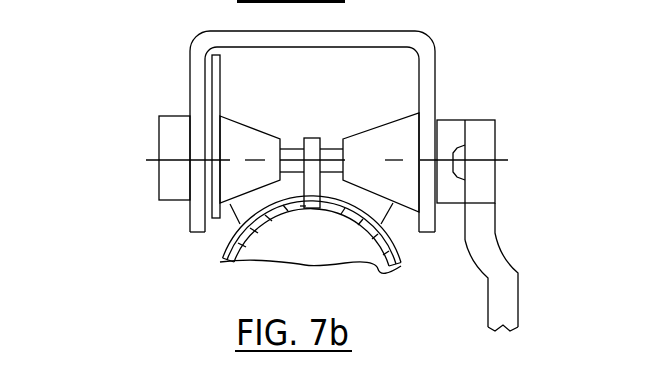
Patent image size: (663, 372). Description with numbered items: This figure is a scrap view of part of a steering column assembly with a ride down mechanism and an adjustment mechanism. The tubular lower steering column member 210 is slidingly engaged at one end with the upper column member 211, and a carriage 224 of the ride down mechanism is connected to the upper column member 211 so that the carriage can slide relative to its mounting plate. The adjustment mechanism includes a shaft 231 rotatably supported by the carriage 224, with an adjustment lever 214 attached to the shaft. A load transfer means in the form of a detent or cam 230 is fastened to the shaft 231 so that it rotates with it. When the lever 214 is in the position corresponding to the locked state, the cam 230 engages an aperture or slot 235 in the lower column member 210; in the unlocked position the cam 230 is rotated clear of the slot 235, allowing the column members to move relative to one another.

The carriage 224 is at (159, 133).
The shaft 231 is at (331, 139).
The cam 230 is at (312, 138).
The upper column member 211 is at (221, 258).
The lower steering column member 210 is at (232, 266).
The slot 235 is at (304, 210).
The adjustment lever 214 is at (497, 216).